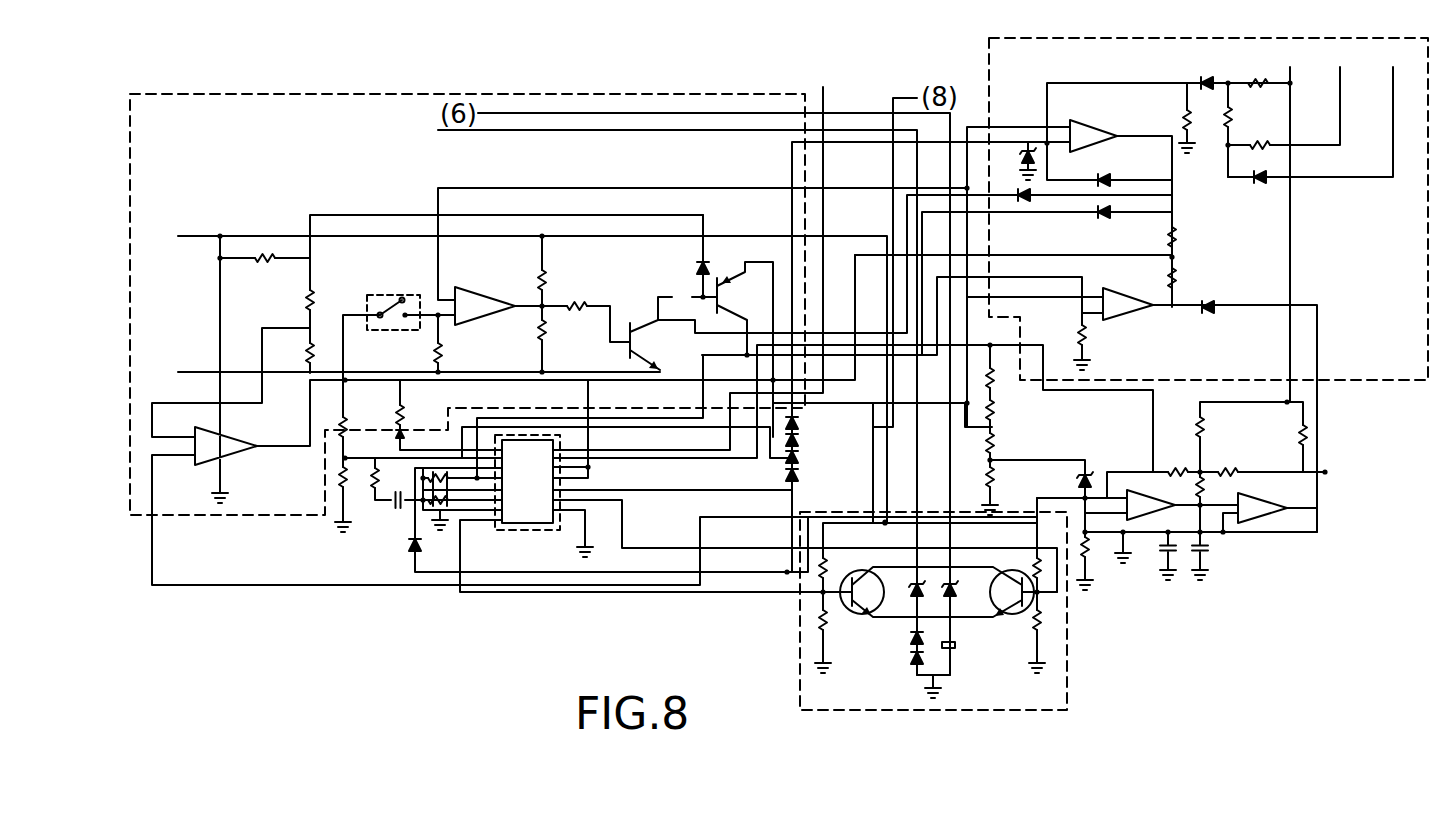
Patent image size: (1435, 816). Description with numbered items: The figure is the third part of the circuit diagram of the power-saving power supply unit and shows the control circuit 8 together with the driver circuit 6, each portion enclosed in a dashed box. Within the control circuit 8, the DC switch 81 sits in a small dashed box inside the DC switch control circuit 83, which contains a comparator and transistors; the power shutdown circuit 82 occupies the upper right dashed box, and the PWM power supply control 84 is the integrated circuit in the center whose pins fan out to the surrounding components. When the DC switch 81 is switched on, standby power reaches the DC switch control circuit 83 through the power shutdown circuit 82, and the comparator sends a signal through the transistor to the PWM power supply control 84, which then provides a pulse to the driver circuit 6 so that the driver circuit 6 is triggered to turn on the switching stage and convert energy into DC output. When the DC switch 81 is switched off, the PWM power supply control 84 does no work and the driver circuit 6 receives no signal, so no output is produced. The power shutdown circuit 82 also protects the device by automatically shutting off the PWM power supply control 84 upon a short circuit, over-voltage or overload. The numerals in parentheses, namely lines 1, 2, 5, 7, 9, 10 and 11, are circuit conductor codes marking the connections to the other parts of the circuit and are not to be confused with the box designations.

The driver circuit 6 is at (1067, 663).
The control circuit 8 is at (838, 98).
The DC switch 81 is at (388, 295).
The power shutdown circuit 82 is at (1135, 38).
The DC switch control circuit 83 is at (400, 93).
The PWM power supply control 84 is at (522, 530).
The line connection code 1 is at (514, 371).
The line connection code 2 is at (400, 373).
The line connection code 5 is at (660, 396).
The line connection code 7 is at (696, 252).
The line connection code 9 is at (1290, 222).
The line connection code 10 is at (1295, 95).
The line connection code 11 is at (1324, 112).